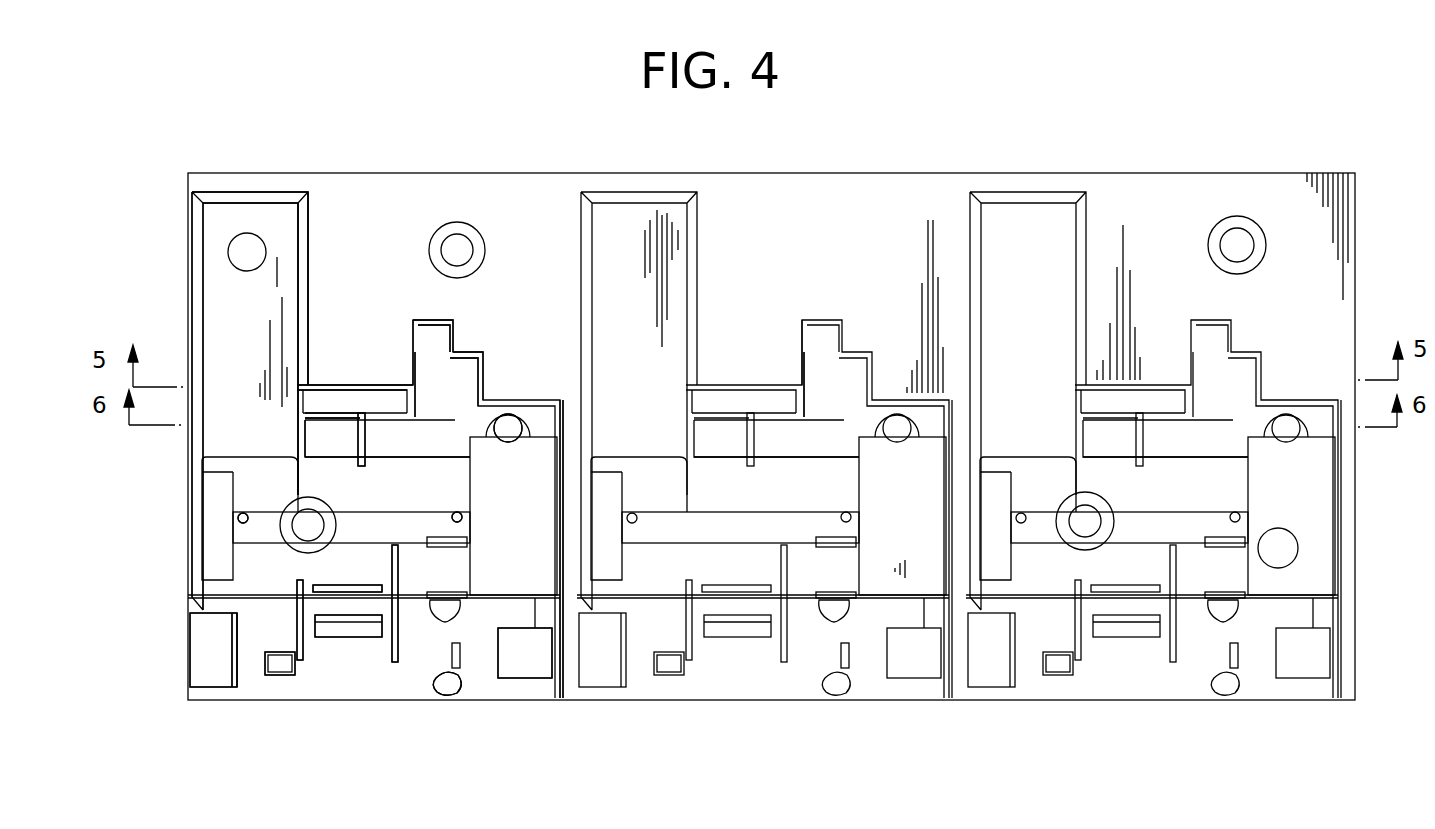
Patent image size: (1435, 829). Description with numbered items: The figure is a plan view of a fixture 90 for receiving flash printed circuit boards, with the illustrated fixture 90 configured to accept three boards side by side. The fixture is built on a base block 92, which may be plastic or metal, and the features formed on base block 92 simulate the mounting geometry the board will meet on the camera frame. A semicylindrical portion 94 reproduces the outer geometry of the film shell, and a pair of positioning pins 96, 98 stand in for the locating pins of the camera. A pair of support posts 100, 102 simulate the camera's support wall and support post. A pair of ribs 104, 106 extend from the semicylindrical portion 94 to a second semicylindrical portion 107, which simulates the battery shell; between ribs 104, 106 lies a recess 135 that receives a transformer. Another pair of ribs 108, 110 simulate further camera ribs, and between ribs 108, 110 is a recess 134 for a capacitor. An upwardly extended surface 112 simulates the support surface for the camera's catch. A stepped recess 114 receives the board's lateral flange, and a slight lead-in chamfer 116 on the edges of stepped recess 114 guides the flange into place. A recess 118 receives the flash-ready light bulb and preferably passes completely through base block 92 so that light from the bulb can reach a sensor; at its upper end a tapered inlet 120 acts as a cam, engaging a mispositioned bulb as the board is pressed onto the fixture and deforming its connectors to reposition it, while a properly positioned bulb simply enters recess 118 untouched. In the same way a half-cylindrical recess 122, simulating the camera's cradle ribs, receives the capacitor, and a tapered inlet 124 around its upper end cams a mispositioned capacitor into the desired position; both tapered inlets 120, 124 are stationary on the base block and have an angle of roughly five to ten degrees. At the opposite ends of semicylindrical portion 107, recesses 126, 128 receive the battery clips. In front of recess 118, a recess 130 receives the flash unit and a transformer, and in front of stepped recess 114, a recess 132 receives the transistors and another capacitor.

The fixture 90 is at (163, 232).
The base block 92 is at (820, 240).
The semicylindrical portion 94 is at (422, 493).
The positioning pin 96 is at (462, 514).
The positioning pin 98 is at (244, 514).
The support post 100 is at (278, 676).
The support post 102 is at (465, 665).
The rib 104 is at (399, 640).
The rib 106 is at (303, 648).
The semicylindrical portion 107 is at (252, 668).
The rib 108 is at (367, 437).
The rib 110 is at (303, 443).
The upwardly extended surface 112 is at (358, 393).
The stepped recess 114 is at (442, 373).
The lead-in chamfer 116 is at (437, 323).
The recess 118 is at (503, 432).
The tapered inlet 120 is at (517, 415).
The half-cylindrical recess 122 is at (227, 367).
The tapered inlet 124 is at (305, 240).
The recess 126 is at (507, 658).
The recess 128 is at (223, 655).
The recess 130 is at (533, 490).
The recess 132 is at (427, 412).
The recess 134 is at (329, 440).
The recess 135 is at (315, 613).